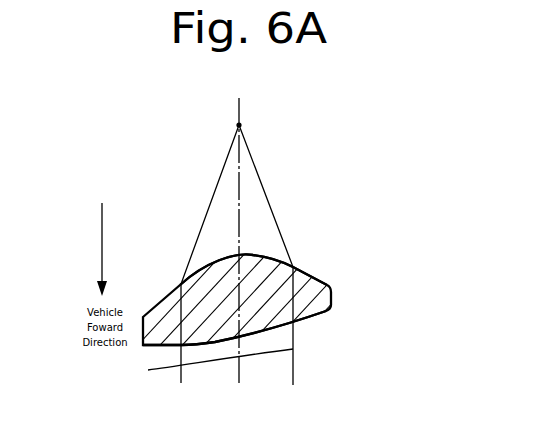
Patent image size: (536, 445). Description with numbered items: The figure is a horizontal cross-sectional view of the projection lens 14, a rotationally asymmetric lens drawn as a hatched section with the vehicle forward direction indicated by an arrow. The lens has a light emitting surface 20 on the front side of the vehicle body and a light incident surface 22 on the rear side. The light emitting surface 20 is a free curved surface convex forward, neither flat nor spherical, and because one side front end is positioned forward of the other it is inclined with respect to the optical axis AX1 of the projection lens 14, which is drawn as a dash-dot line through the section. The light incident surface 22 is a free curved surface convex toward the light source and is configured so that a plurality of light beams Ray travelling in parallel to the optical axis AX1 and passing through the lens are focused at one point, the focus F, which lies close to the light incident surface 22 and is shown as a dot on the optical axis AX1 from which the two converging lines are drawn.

The projection lens 14 is at (331, 297).
The light emitting surface 20 is at (304, 321).
The light incident surface 22 is at (296, 266).
The focus F is at (242, 125).
The optical axis AX1 is at (239, 369).
The light beams Ray is at (181, 356).